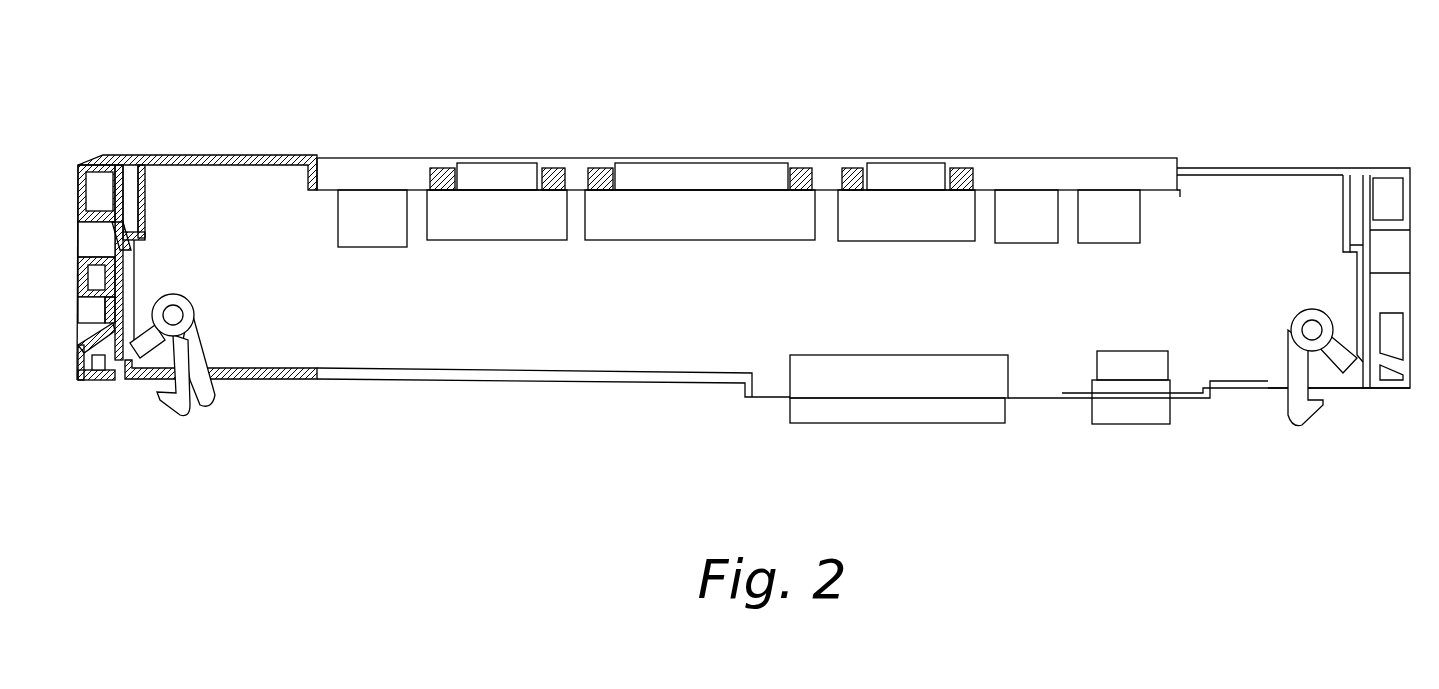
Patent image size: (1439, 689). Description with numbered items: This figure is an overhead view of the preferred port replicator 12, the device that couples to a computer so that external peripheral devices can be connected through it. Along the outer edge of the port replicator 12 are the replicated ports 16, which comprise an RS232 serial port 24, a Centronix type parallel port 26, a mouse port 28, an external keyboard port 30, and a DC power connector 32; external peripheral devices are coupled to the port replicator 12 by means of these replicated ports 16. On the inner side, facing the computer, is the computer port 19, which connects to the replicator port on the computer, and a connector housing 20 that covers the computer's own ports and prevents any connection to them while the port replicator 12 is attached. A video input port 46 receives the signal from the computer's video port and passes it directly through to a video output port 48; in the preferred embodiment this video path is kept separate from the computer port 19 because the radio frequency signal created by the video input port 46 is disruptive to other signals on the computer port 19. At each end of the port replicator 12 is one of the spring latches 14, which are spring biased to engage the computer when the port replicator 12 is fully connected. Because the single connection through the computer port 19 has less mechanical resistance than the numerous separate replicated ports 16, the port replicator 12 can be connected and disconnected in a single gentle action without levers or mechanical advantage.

The port replicator 12 is at (1242, 46).
The spring latches 14 is at (213, 403).
The replicated ports 16 is at (378, 157).
The computer port 19 is at (960, 423).
The connector housing 20 is at (1413, 168).
The RS232 serial port 24 is at (512, 240).
The Centronix type parallel port 26 is at (688, 240).
The mouse port 28 is at (1037, 243).
The external keyboard port 30 is at (1140, 230).
The DC power connector 32 is at (380, 247).
The video input port 46 is at (1150, 424).
The video output port 48 is at (907, 241).